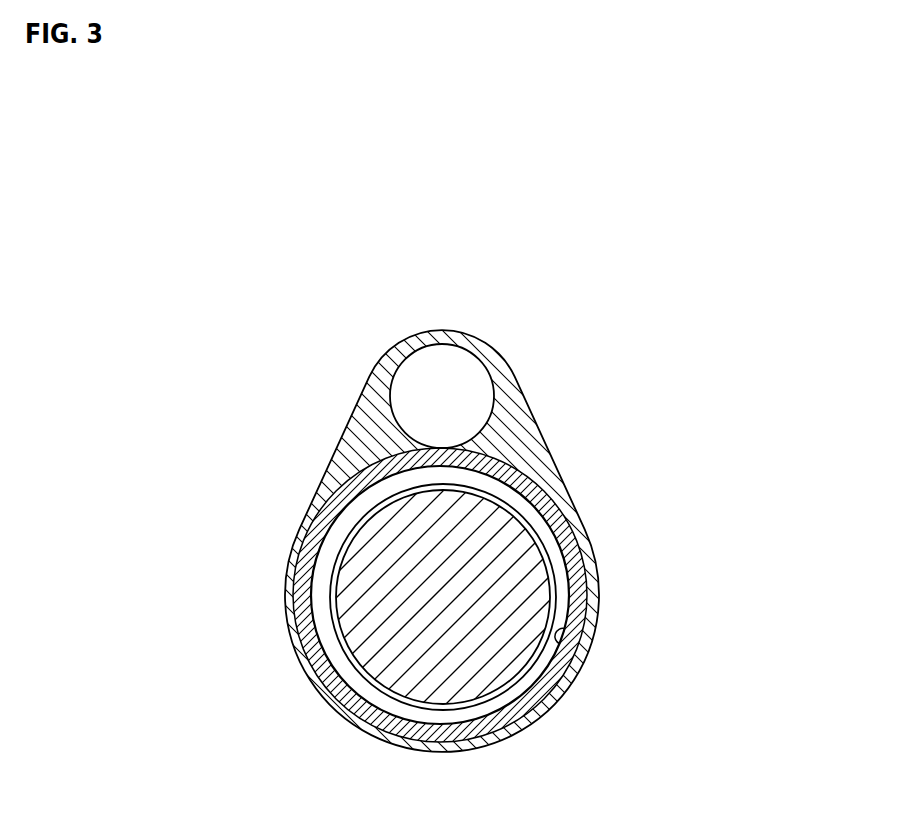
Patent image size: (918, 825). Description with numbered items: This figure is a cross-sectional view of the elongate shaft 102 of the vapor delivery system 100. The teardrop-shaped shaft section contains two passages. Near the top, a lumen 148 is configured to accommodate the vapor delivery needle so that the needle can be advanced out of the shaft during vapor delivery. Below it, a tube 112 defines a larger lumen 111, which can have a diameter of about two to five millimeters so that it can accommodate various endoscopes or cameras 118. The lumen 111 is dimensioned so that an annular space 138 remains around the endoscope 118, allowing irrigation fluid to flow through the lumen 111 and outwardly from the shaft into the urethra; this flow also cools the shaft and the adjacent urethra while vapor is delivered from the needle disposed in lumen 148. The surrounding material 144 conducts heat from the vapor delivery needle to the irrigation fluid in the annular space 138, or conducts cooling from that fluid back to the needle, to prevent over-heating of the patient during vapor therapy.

The vapor delivery system 100 is at (698, 190).
The elongate shaft 102 is at (348, 429).
The material 144 is at (512, 440).
The lumen 148 is at (455, 375).
The tube 112 is at (582, 546).
The lumen 111 is at (580, 626).
The annular space 138 is at (330, 634).
The endoscope 118 is at (357, 575).